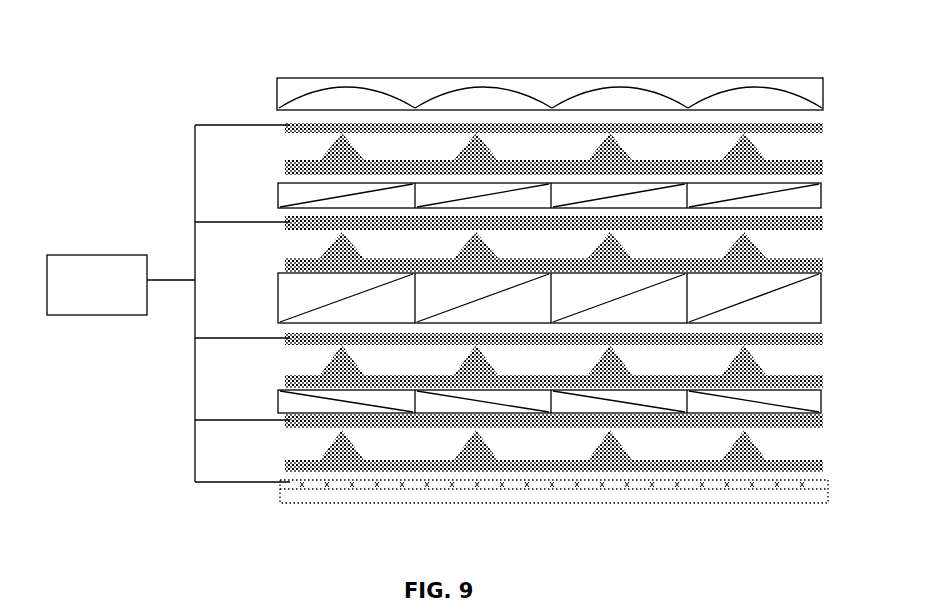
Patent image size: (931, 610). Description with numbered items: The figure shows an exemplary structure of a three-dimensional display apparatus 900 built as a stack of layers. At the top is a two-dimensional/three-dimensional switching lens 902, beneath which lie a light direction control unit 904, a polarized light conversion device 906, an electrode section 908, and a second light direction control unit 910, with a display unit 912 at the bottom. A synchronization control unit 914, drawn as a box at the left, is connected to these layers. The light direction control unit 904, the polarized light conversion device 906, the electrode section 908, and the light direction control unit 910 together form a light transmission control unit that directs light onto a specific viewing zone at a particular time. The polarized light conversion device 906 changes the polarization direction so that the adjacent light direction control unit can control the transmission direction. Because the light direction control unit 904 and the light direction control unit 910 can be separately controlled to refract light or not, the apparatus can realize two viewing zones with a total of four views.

The 3D display apparatus 900 is at (358, 46).
The 2D/3D switching lens 902 is at (283, 101).
The light direction control unit 904 is at (276, 191).
The polarized light conversion device 906 is at (278, 297).
The electrode section 908 is at (280, 352).
The light direction control unit 910 is at (278, 405).
The display unit 912 is at (290, 492).
The synchronization control unit 914 is at (78, 252).